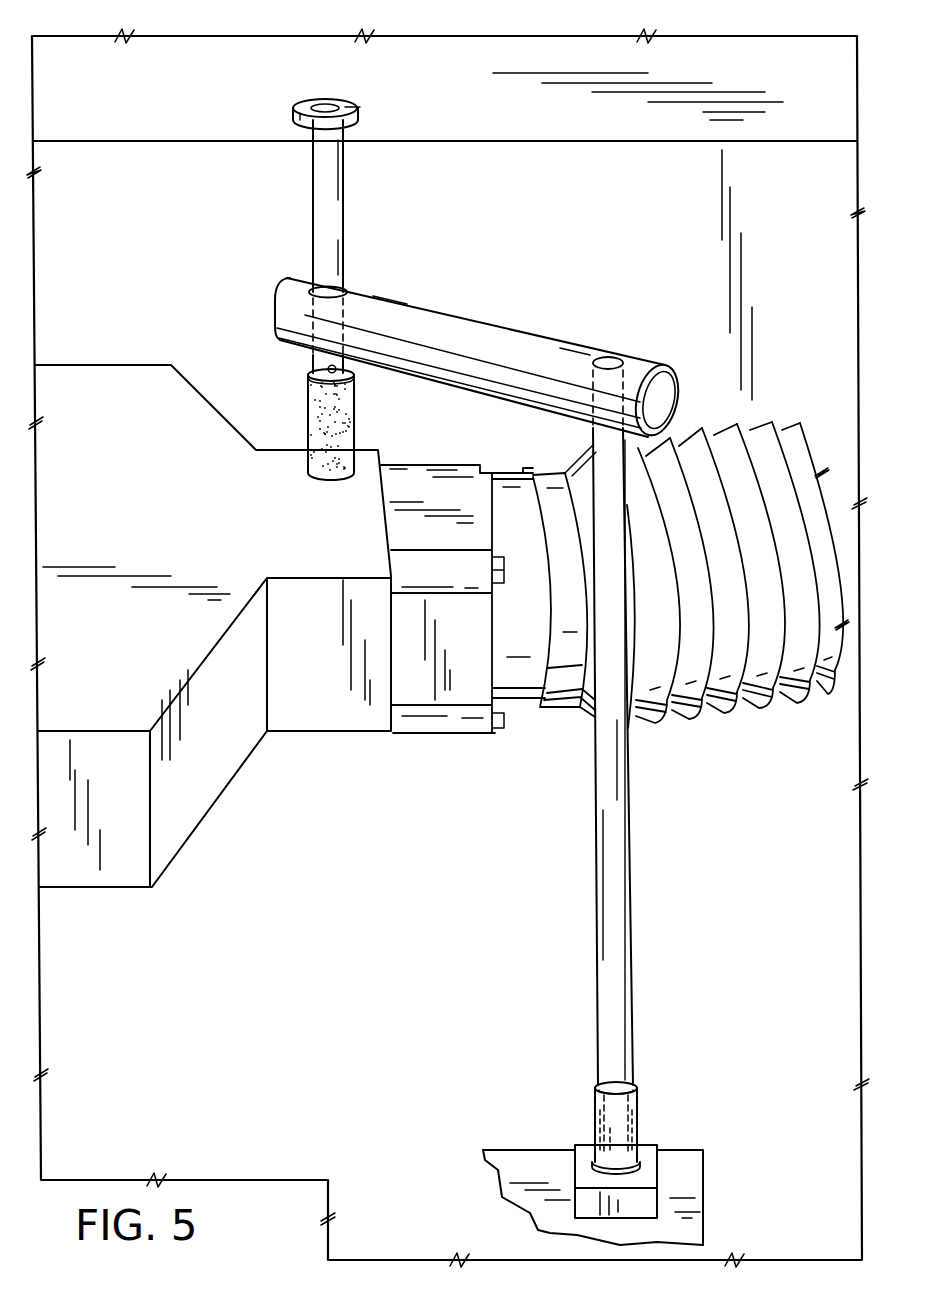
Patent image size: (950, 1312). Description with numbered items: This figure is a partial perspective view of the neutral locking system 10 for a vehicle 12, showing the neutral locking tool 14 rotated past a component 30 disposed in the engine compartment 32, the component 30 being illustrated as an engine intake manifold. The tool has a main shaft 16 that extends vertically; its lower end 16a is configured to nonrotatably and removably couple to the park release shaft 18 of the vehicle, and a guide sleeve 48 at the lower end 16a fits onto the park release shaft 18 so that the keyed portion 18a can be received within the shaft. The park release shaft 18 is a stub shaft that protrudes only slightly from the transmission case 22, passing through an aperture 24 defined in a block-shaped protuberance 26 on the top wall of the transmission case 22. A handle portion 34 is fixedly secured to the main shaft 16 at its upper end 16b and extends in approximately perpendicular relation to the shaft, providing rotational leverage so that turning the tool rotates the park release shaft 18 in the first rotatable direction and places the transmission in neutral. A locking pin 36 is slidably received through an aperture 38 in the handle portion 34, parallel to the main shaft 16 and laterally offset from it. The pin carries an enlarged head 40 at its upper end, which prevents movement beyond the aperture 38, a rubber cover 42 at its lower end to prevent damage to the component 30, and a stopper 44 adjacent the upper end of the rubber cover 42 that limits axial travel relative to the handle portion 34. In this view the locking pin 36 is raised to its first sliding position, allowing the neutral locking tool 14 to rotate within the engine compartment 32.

The neutral locking system 10 is at (716, 909).
The vehicle 12 is at (863, 95).
The neutral locking tool 14 is at (523, 291).
The main shaft 16 is at (620, 853).
The lower end 16a is at (630, 1110).
The upper end 16b is at (606, 357).
The park release shaft 18 is at (588, 1146).
The keyed portion 18a is at (606, 1130).
The transmission case 22 is at (695, 1200).
The aperture 24 is at (640, 1163).
The protuberance 26 is at (647, 1180).
The component 30 is at (320, 713).
The engine compartment 32 is at (818, 324).
The handle portion 34 is at (458, 327).
The locking pin 36 is at (330, 204).
The aperture 38 is at (322, 296).
The enlarged head 40 is at (358, 104).
The rubber cover 42 is at (355, 428).
The stopper 44 is at (328, 367).
The guide sleeve 48 is at (598, 1088).